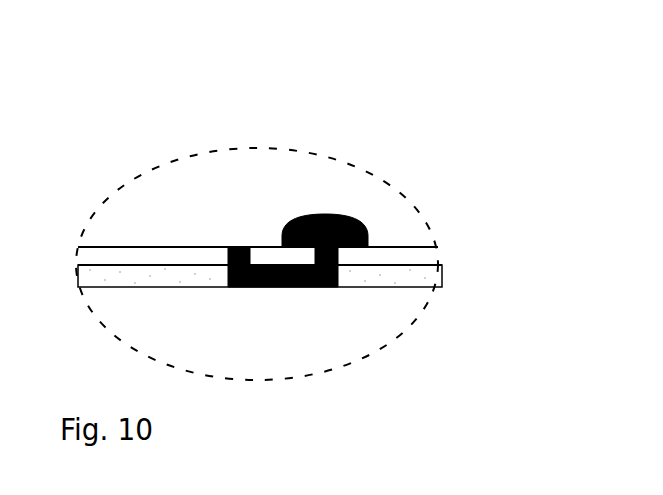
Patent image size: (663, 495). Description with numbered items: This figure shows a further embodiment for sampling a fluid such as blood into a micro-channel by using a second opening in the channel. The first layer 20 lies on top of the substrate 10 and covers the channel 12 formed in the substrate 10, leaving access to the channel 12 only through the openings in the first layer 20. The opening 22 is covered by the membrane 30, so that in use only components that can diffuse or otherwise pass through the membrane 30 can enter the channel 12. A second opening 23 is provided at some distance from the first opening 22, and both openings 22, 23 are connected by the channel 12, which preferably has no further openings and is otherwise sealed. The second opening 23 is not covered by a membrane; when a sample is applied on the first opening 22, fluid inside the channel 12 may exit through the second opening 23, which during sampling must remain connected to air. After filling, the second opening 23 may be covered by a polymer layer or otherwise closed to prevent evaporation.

The substrate 10 is at (257, 264).
The channel 12 is at (430, 275).
The first layer 20 is at (430, 252).
The opening 22 is at (335, 287).
The second opening 23 is at (227, 247).
The membrane 30 is at (367, 238).